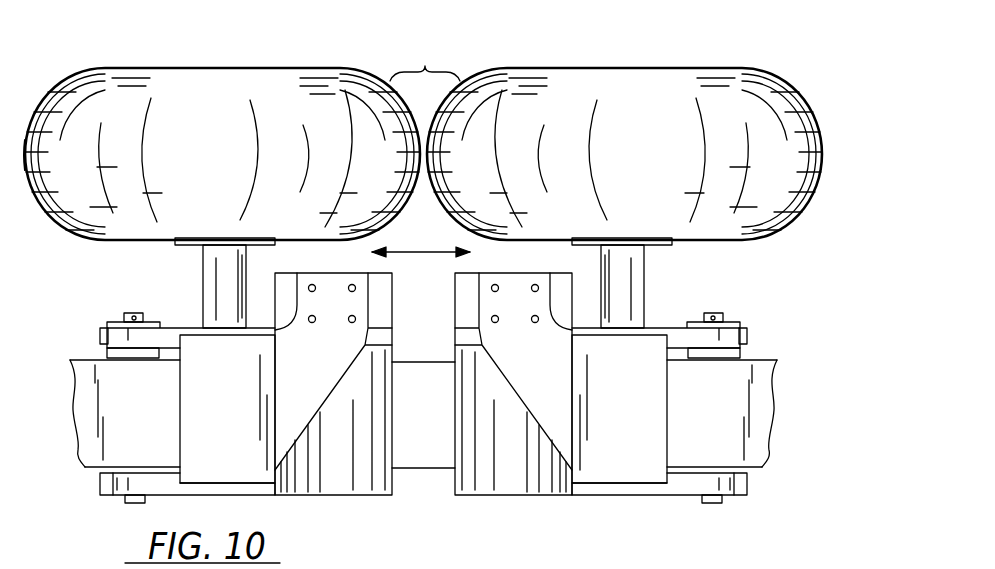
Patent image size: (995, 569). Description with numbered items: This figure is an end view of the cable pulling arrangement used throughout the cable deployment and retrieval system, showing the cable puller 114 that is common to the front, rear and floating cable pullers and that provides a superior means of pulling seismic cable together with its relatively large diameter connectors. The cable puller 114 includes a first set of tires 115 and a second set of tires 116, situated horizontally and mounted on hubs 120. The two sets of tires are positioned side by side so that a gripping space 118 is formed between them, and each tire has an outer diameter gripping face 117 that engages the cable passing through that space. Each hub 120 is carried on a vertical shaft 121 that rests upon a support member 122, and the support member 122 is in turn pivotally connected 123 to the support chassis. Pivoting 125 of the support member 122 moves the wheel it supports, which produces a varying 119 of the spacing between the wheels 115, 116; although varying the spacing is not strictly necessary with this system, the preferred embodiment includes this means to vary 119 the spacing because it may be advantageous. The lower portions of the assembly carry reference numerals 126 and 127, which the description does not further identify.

The cable puller 114 is at (745, 497).
The first set of tires 115 is at (112, 66).
The second set of tires 116 is at (598, 70).
The outer diameter gripping face 117 is at (26, 179).
The gripping space 118 is at (427, 66).
The means to vary the spacing 119 is at (421, 240).
The hubs 120 is at (165, 241).
The vertical shaft 121 is at (204, 263).
The support member 122 is at (100, 335).
The pivotal connection 123 is at (126, 318).
The pivoting of the support member 125 is at (174, 318).
The support member 126 is at (409, 560).
The support member 127 is at (508, 560).